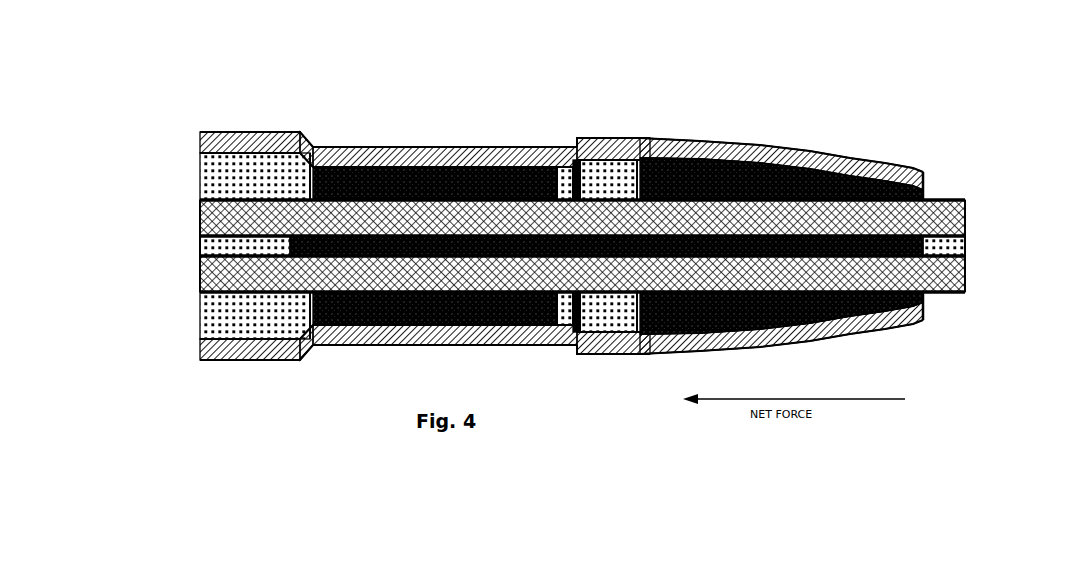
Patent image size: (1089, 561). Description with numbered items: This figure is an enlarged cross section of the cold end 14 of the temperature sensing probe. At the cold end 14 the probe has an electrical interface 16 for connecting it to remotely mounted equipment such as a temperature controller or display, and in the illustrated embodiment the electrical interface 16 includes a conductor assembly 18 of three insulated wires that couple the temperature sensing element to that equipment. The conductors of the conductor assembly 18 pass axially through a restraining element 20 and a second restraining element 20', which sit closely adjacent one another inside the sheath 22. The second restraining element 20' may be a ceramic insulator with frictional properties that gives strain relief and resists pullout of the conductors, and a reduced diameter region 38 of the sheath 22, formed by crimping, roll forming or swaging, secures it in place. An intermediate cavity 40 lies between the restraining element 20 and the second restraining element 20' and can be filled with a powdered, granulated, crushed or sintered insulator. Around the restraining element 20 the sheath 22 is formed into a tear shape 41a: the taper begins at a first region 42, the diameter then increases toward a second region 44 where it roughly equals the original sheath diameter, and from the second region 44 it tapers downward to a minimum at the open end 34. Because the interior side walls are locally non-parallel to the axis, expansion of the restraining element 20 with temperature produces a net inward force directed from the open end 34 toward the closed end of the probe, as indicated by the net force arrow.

The cold end 14 is at (840, 183).
The electrical interface 16 is at (990, 243).
The conductor assembly 18 is at (935, 202).
The restraining element 20 is at (597, 310).
The second restraining element 20' is at (445, 341).
The sheath 22 is at (230, 132).
The open end 34 is at (1018, 133).
The reduced diameter region 38 is at (456, 128).
The intermediate cavity 40 is at (597, 360).
The tear shape 41a is at (733, 47).
The first region 42 is at (573, 140).
The second region 44 is at (634, 135).